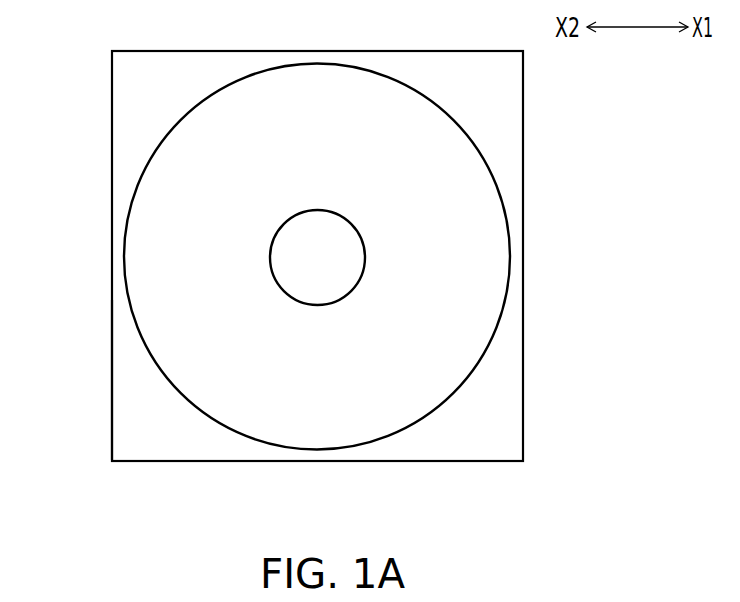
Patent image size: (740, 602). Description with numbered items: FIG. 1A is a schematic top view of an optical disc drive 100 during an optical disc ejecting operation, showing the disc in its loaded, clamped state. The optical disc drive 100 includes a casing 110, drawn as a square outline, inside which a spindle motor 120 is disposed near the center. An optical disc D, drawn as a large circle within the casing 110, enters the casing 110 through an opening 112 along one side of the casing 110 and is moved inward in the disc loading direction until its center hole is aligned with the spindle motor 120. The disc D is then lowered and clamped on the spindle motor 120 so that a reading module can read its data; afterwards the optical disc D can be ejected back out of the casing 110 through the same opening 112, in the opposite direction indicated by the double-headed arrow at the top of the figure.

The optical disc drive 100 is at (523, 502).
The casing 110 is at (503, 389).
The opening 112 is at (110, 404).
The spindle motor 120 is at (347, 255).
The optical disc D is at (458, 175).